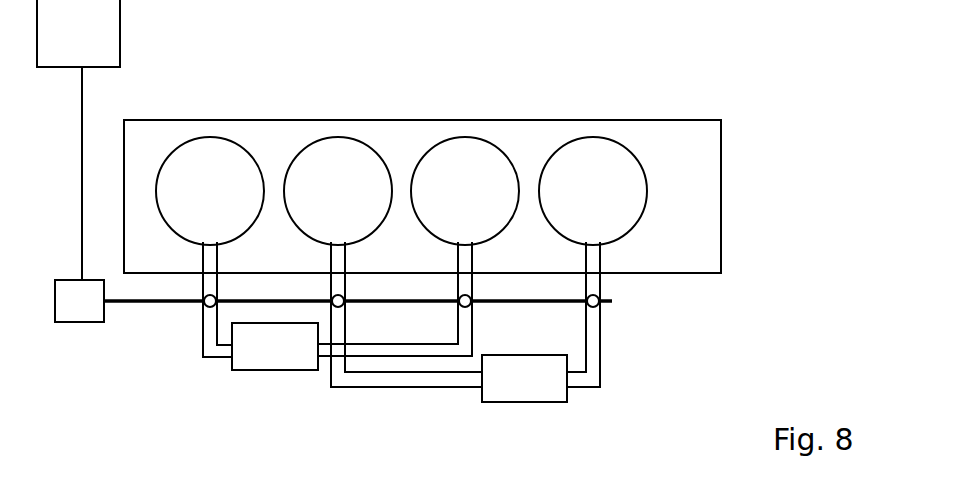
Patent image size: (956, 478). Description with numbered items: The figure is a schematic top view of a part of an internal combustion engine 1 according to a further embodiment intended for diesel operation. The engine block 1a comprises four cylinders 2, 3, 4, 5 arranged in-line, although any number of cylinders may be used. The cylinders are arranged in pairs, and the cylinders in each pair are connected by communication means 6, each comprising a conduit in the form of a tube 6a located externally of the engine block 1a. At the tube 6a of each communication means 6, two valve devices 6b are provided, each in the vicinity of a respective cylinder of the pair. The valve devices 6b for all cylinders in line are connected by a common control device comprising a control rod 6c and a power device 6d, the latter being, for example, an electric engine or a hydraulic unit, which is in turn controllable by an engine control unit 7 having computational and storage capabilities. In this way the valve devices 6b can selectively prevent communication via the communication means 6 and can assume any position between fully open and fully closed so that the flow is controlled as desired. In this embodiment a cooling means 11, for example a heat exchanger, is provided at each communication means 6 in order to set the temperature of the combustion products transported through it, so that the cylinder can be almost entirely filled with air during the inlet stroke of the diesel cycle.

The internal combustion engine 1 is at (757, 200).
The engine block 1a is at (645, 133).
The cylinder 2 is at (222, 206).
The cylinder 3 is at (350, 206).
The cylinder 4 is at (477, 206).
The cylinder 5 is at (605, 206).
The communication means 6 is at (643, 348).
The tube 6a is at (212, 357).
The valve device 6b is at (203, 306).
The control rod 6c is at (487, 304).
The power device 6d is at (63, 322).
The engine control unit 7 is at (88, 50).
The cooling means 11 is at (257, 364).